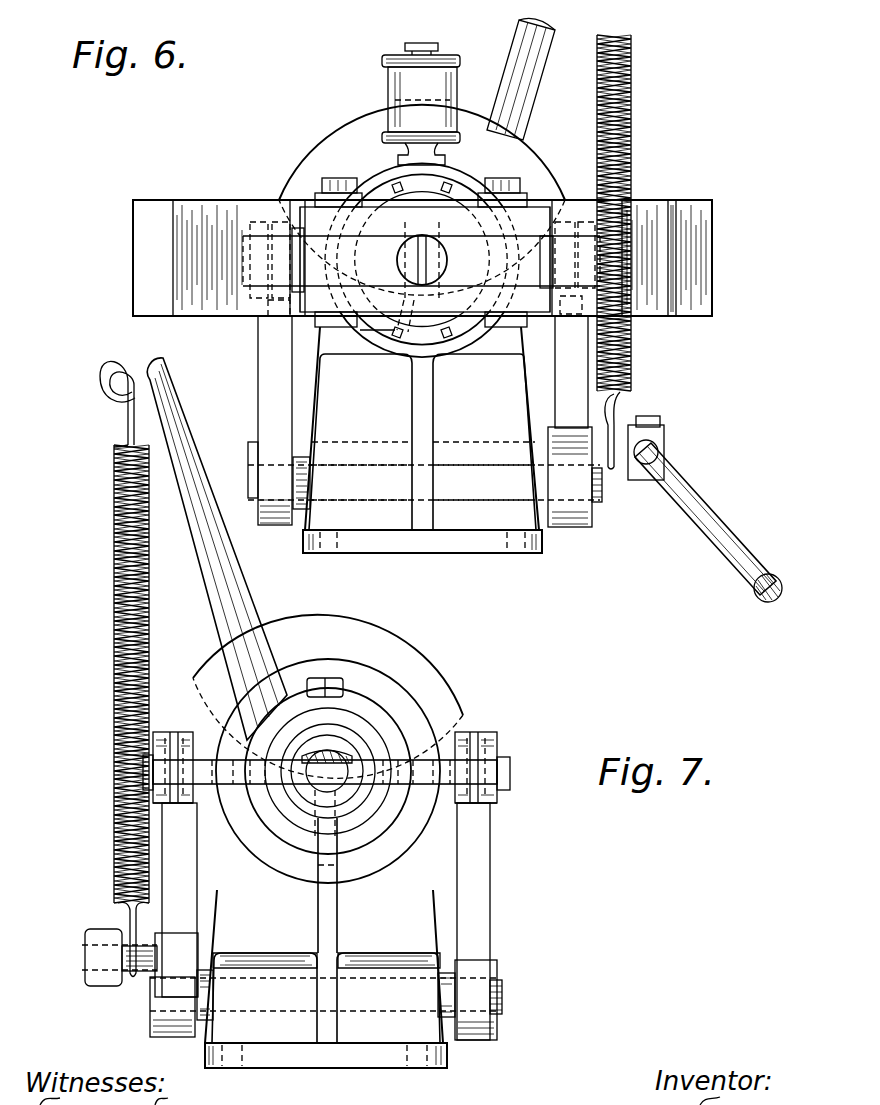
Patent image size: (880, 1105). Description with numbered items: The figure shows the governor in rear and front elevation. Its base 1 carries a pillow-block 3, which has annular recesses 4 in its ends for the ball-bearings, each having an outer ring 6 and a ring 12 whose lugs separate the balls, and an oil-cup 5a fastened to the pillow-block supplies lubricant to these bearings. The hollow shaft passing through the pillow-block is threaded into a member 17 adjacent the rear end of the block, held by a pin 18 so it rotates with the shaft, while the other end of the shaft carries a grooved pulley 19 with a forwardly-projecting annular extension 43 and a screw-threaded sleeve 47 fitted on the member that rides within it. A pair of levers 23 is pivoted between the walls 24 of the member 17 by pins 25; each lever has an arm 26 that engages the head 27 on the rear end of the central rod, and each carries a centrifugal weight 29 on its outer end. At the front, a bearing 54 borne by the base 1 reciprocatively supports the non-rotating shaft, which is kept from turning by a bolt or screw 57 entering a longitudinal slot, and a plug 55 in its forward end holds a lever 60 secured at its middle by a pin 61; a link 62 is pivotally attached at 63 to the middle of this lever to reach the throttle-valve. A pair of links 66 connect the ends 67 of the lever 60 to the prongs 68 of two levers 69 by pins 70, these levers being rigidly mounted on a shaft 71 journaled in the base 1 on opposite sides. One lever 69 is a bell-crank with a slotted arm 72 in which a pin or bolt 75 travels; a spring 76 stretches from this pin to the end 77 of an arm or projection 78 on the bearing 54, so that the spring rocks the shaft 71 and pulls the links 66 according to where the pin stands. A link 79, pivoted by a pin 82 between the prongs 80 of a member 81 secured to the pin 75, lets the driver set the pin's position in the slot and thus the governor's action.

In FIG. 6, the base 1 is at (468, 545).
In FIG. 7, the base 1 is at (302, 1058).
In FIG. 6, the pillow-block 3 is at (450, 176).
In FIG. 6, the annular recesses 4 is at (340, 205).
In FIG. 6, the oil-cup 5a is at (395, 85).
In FIG. 6, the outer ring 6 is at (445, 335).
In FIG. 6, the ring 12 is at (470, 192).
In FIG. 6, the member 17 is at (422, 200).
In FIG. 6, the pin 18 is at (392, 328).
In FIG. 6, the pulley 19 is at (350, 118).
In FIG. 7, the pulley 19 is at (340, 616).
In FIG. 6, the levers 23 is at (245, 260).
In FIG. 6, the walls 24 is at (422, 260).
In FIG. 6, the pins 25 is at (305, 326).
In FIG. 6, the arm 26 is at (410, 300).
In FIG. 6, the head 27 is at (412, 240).
In FIG. 6, the centrifugal weight 29 is at (148, 212).
In FIG. 7, the forwardly-projecting annular extension 43 is at (400, 688).
In FIG. 7, the sleeve 47 is at (405, 736).
In FIG. 7, the bearing 54 is at (395, 832).
In FIG. 7, the plug 55 is at (346, 845).
In FIG. 7, the bolt or screw 57 is at (320, 678).
In FIG. 7, the lever 60 is at (232, 765).
In FIG. 7, the pin 61 is at (318, 818).
In FIG. 7, the link 62 is at (300, 757).
In FIG. 7, the pivot 63 is at (330, 750).
In FIG. 6, the links 66 is at (275, 304).
In FIG. 7, the links 66 is at (182, 806).
In FIG. 7, the ends 67 is at (147, 772).
In FIG. 6, the prongs 68 is at (282, 222).
In FIG. 7, the prongs 68 is at (182, 732).
In FIG. 6, the levers 69 is at (424, 421).
In FIG. 7, the levers 69 is at (323, 921).
In FIG. 6, the pins 70 is at (290, 236).
In FIG. 7, the pins 70 is at (150, 768).
In FIG. 6, the shaft 71 is at (603, 492).
In FIG. 7, the shaft 71 is at (503, 1000).
In FIG. 7, the slotted arm 72 is at (186, 960).
In FIG. 7, the pin or bolt 75 is at (134, 962).
In FIG. 6, the spring 76 is at (628, 96).
In FIG. 7, the spring 76 is at (118, 560).
In FIG. 7, the end 77 is at (112, 380).
In FIG. 6, the arm or projection 78 is at (512, 70).
In FIG. 7, the arm or projection 78 is at (236, 597).
In FIG. 6, the link 79 is at (738, 540).
In FIG. 6, the prongs 80 is at (668, 452).
In FIG. 7, the member 81 is at (100, 935).
In FIG. 6, the pin 82 is at (650, 418).